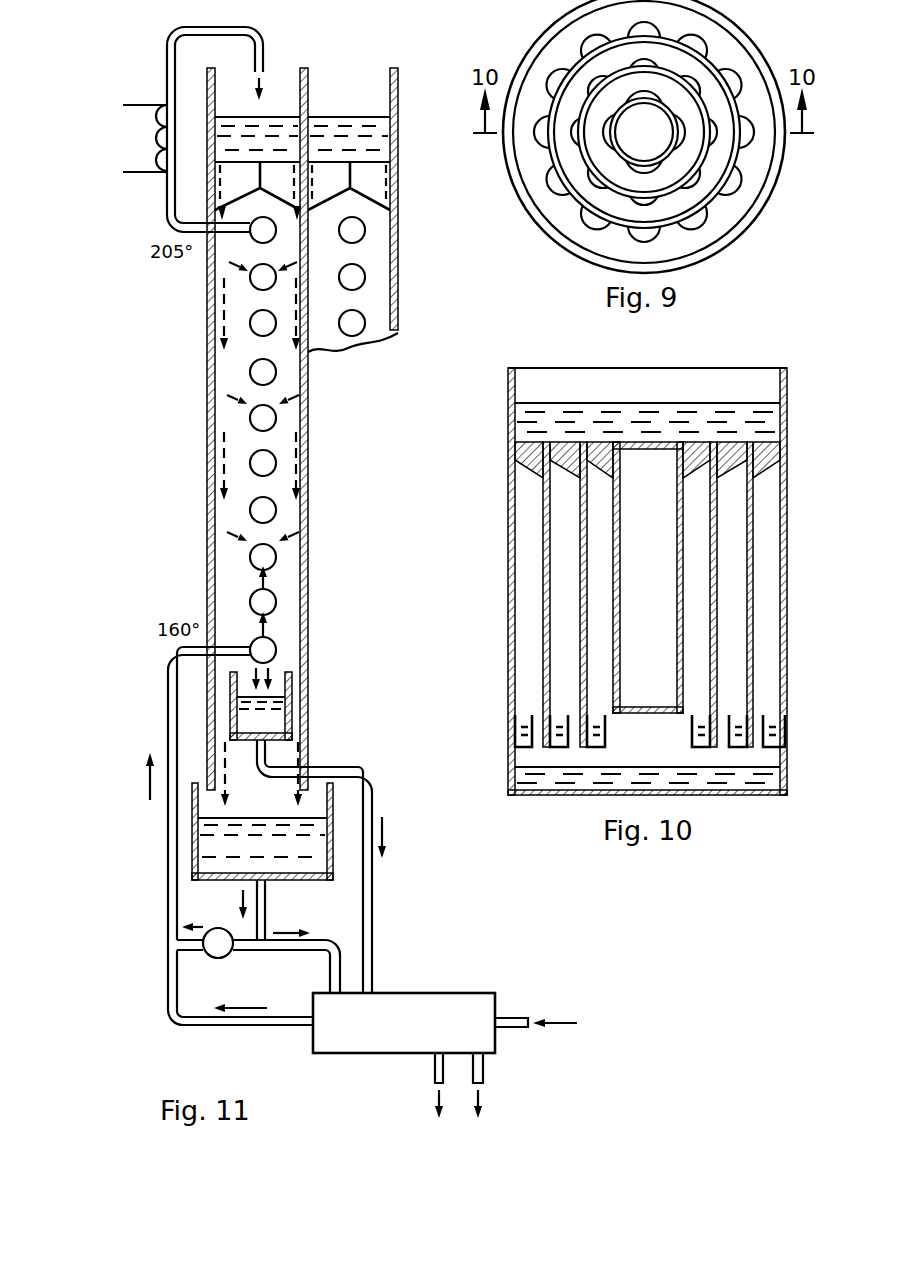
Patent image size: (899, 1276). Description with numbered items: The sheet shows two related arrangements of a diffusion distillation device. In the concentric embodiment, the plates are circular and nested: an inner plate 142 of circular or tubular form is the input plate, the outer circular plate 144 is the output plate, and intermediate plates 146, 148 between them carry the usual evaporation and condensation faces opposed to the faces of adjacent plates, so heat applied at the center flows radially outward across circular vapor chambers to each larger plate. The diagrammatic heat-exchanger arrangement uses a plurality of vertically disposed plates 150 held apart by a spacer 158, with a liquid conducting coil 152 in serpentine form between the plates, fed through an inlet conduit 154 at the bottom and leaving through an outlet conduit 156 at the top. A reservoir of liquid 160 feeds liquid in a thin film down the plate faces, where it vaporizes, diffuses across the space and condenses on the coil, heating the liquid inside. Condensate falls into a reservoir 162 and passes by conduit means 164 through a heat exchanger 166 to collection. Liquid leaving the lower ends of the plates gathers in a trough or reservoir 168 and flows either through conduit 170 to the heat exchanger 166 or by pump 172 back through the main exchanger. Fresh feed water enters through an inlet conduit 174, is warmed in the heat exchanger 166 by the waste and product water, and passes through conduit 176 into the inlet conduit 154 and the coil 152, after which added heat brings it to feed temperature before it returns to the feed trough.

In FIG. 9, the inner plate 142 is at (626, 116).
In FIG. 10, the inner plate 142 is at (622, 580).
In FIG. 9, the outer circular plate 144 is at (518, 193).
In FIG. 10, the outer circular plate 144 is at (508, 593).
In FIG. 9, the intermediate plate 146 is at (665, 198).
In FIG. 10, the intermediate plate 146 is at (580, 535).
In FIG. 9, the intermediate plate 148 is at (720, 207).
In FIG. 10, the intermediate plate 148 is at (542, 488).
In FIG. 11, the vertically disposed plates 150 is at (210, 413).
In FIG. 11, the liquid conducting coil 152 is at (275, 558).
In FIG. 11, the inlet conduit 154 is at (167, 680).
In FIG. 11, the outlet conduit 156 is at (170, 50).
In FIG. 11, the spacer 158 is at (233, 173).
In FIG. 11, the reservoir of liquid 160 is at (273, 117).
In FIG. 11, the reservoir 162 is at (293, 700).
In FIG. 11, the conduit means 164 is at (373, 930).
In FIG. 11, the heat exchanger 166 is at (397, 993).
In FIG. 11, the trough or reservoir 168 is at (333, 833).
In FIG. 11, the conduit 170 is at (313, 940).
In FIG. 11, the pump 172 is at (217, 927).
In FIG. 11, the inlet conduit 174 is at (507, 1018).
In FIG. 11, the conduit 176 is at (177, 988).